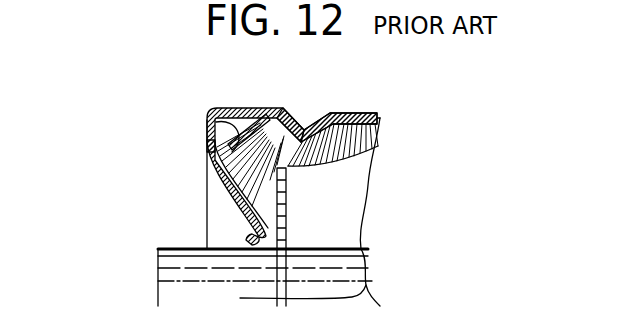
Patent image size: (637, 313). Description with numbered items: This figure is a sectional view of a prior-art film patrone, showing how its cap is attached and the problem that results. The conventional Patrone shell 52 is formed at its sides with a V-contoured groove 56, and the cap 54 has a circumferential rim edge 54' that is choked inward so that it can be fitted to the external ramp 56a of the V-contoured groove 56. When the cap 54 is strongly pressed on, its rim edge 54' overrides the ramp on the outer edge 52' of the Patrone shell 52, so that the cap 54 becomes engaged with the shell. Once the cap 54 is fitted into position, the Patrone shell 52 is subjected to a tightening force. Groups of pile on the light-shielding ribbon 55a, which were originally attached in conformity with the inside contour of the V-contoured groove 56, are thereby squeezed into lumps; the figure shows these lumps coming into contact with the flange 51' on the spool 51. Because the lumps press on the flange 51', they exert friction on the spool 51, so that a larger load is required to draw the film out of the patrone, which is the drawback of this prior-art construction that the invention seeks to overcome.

The spool 51 is at (249, 258).
The flange 51' is at (351, 237).
The Patrone shell 52 is at (329, 119).
The outer edge 52' is at (226, 152).
The cap 54 is at (249, 183).
The circumferential rim edge 54' is at (287, 132).
The light-shielding ribbon 55a is at (370, 153).
The V-contoured groove 56 is at (308, 128).
The external ramp 56a is at (288, 110).